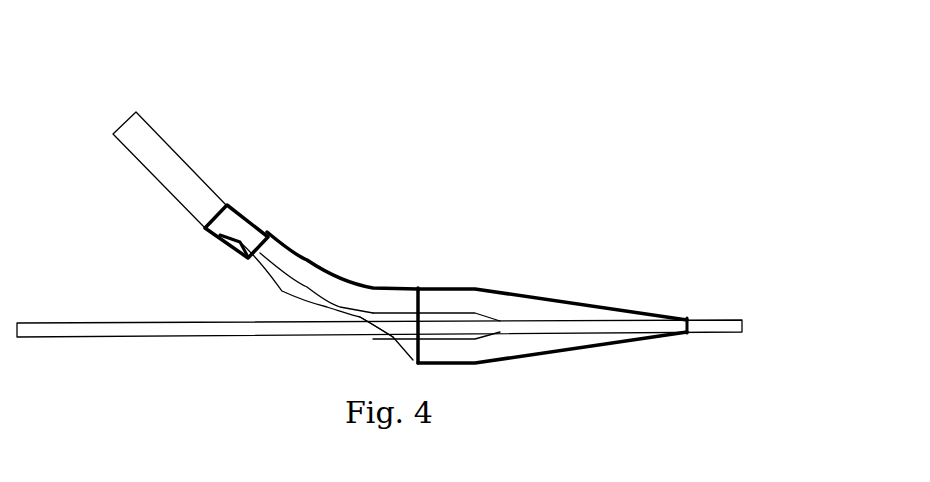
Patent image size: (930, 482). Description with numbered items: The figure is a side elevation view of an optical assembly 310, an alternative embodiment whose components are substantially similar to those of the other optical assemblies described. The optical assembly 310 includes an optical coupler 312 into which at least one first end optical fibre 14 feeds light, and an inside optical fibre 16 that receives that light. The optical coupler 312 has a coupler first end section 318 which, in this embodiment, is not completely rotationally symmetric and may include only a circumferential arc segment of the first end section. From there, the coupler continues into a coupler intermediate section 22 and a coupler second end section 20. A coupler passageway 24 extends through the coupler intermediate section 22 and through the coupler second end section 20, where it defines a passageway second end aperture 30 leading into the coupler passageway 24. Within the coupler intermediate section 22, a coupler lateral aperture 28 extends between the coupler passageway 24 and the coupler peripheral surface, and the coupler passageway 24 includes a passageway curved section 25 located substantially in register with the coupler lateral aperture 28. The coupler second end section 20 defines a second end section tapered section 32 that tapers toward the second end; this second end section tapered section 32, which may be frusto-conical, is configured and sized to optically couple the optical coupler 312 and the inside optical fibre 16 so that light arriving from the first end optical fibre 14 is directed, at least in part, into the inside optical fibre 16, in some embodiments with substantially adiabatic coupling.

The first end optical fibre 14 is at (163, 152).
The inside optical fibre 16 is at (62, 331).
The coupler second end section 20 is at (683, 358).
The coupler intermediate section 22 is at (342, 251).
The coupler passageway 24 is at (372, 313).
The passageway curved section 25 is at (417, 282).
The coupler lateral aperture 28 is at (388, 338).
The passageway second end aperture 30 is at (689, 319).
The second end section tapered section 32 is at (697, 277).
The optical assembly 310 is at (598, 107).
The optical coupler 312 is at (455, 284).
The coupler first end section 318 is at (276, 229).